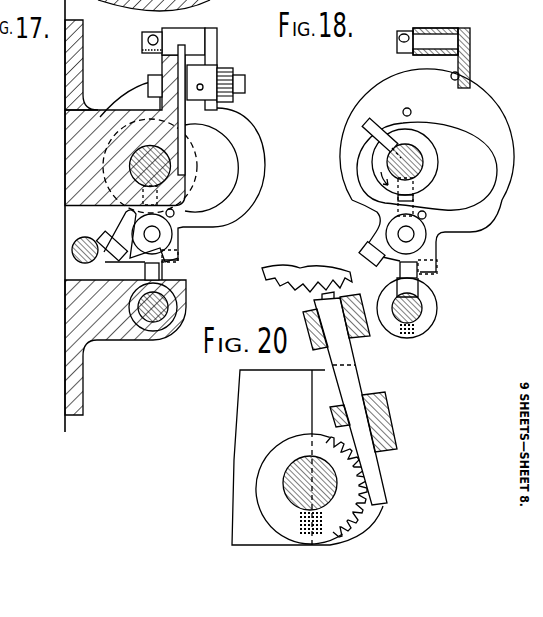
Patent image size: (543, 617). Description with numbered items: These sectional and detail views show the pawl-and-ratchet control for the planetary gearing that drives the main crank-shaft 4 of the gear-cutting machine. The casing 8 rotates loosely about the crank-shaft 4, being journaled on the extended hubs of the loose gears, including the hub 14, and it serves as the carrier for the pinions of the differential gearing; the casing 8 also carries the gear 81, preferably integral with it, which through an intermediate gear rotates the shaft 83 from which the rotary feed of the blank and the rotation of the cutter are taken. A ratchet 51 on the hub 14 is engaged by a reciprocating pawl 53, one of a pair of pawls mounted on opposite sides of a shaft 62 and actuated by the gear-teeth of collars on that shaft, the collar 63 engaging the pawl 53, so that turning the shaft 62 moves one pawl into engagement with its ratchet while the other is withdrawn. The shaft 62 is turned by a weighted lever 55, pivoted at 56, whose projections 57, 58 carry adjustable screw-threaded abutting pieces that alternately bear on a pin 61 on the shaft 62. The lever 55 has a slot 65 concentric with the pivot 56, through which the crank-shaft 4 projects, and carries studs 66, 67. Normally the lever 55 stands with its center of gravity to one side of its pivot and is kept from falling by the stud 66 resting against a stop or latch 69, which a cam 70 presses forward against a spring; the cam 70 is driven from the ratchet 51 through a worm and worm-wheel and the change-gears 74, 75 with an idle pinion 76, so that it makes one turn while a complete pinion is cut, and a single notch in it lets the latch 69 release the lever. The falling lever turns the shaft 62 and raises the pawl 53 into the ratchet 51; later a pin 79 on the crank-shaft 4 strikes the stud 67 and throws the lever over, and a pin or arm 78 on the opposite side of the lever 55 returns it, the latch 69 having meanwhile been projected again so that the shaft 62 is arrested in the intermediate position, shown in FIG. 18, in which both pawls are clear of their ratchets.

In FIG. 17, the main crank-shaft 4 is at (162, 167).
In FIG. 18, the main crank-shaft 4 is at (422, 157).
In FIG. 17, the casing 8 is at (0, 199).
In FIG. 17, the hub 14 is at (0, 208).
In FIG. 18, the ratchet 51 is at (280, 276).
In FIG. 20, the reciprocating pawl 53 is at (337, 348).
In FIG. 17, the weighted lever 55 is at (0, 136).
In FIG. 18, the weighted lever 55 is at (468, 112).
In FIG. 17, the pivot 56 is at (155, 235).
In FIG. 18, the pivot 56 is at (406, 234).
In FIG. 17, the projection 57 is at (180, 258).
In FIG. 18, the projection 57 is at (437, 274).
In FIG. 17, the projection 58 is at (107, 231).
In FIG. 18, the projection 58 is at (362, 254).
In FIG. 17, the pin 61 is at (129, 257).
In FIG. 18, the pin 61 is at (400, 272).
In FIG. 17, the shaft 62 is at (165, 305).
In FIG. 18, the shaft 62 is at (421, 313).
In FIG. 20, the shaft 62 is at (302, 462).
In FIG. 20, the collar 63 is at (350, 476).
In FIG. 17, the slot 65 is at (0, 159).
In FIG. 18, the pin or stud 66 is at (452, 79).
In FIG. 18, the stud 67 is at (412, 112).
In FIG. 17, the stop or latch 69 is at (219, 45).
In FIG. 18, the stop or latch 69 is at (470, 57).
In FIG. 17, the cam 70 is at (217, 110).
In FIG. 17, the change-gear 74 is at (8, 56).
In FIG. 17, the change-gear 75 is at (247, 73).
In FIG. 17, the idle pinion 76 is at (0, 100).
In FIG. 18, the pin or arm 78 is at (413, 198).
In FIG. 18, the pin 79 is at (371, 121).
In FIG. 17, the gear 81 is at (0, 178).
In FIG. 17, the shaft 83 is at (72, 252).